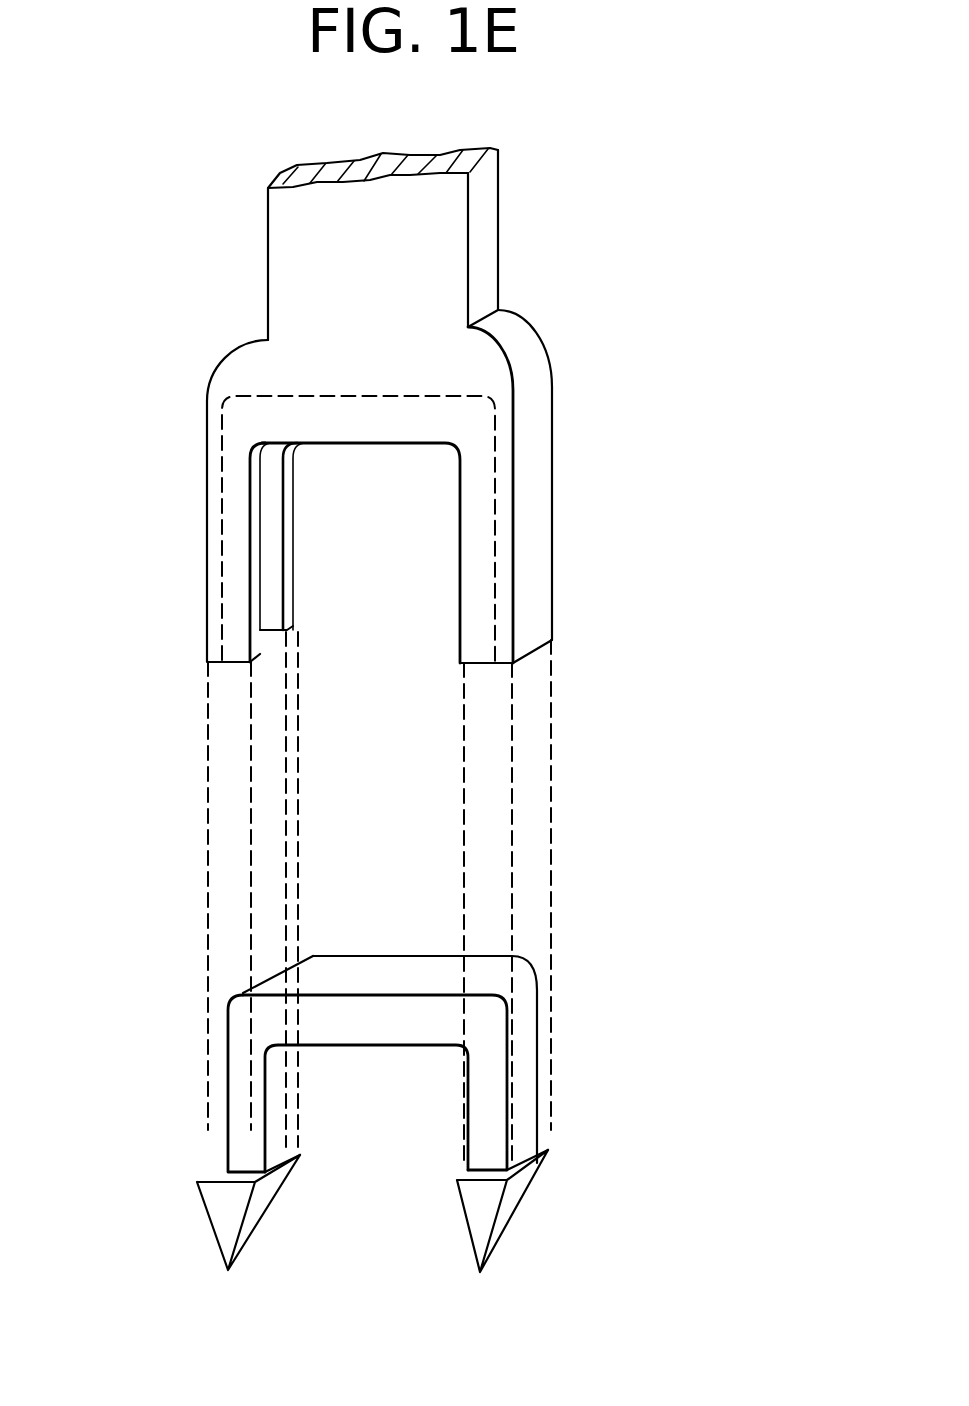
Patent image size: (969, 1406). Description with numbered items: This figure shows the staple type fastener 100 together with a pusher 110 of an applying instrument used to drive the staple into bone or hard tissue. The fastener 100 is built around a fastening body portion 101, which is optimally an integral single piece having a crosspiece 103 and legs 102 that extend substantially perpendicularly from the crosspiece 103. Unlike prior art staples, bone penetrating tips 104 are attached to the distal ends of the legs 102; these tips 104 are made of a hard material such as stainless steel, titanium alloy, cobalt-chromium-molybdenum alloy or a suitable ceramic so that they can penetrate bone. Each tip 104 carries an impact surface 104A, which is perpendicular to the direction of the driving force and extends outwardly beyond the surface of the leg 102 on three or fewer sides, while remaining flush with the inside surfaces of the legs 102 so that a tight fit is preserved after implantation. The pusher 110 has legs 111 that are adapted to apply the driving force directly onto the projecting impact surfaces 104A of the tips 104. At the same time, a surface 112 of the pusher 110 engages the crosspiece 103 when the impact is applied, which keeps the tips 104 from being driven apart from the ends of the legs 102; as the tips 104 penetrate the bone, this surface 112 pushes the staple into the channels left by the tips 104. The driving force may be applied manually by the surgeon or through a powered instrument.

The staple type fastener 100 is at (645, 1030).
The pusher 110 is at (398, 270).
The surface 112 is at (389, 393).
The legs 111 is at (450, 577).
The crosspiece 103 is at (397, 1034).
The legs 102 is at (467, 1103).
The fastening body portion 101 is at (227, 1050).
The tips 104 is at (222, 1222).
The impact surface 104A is at (218, 1174).